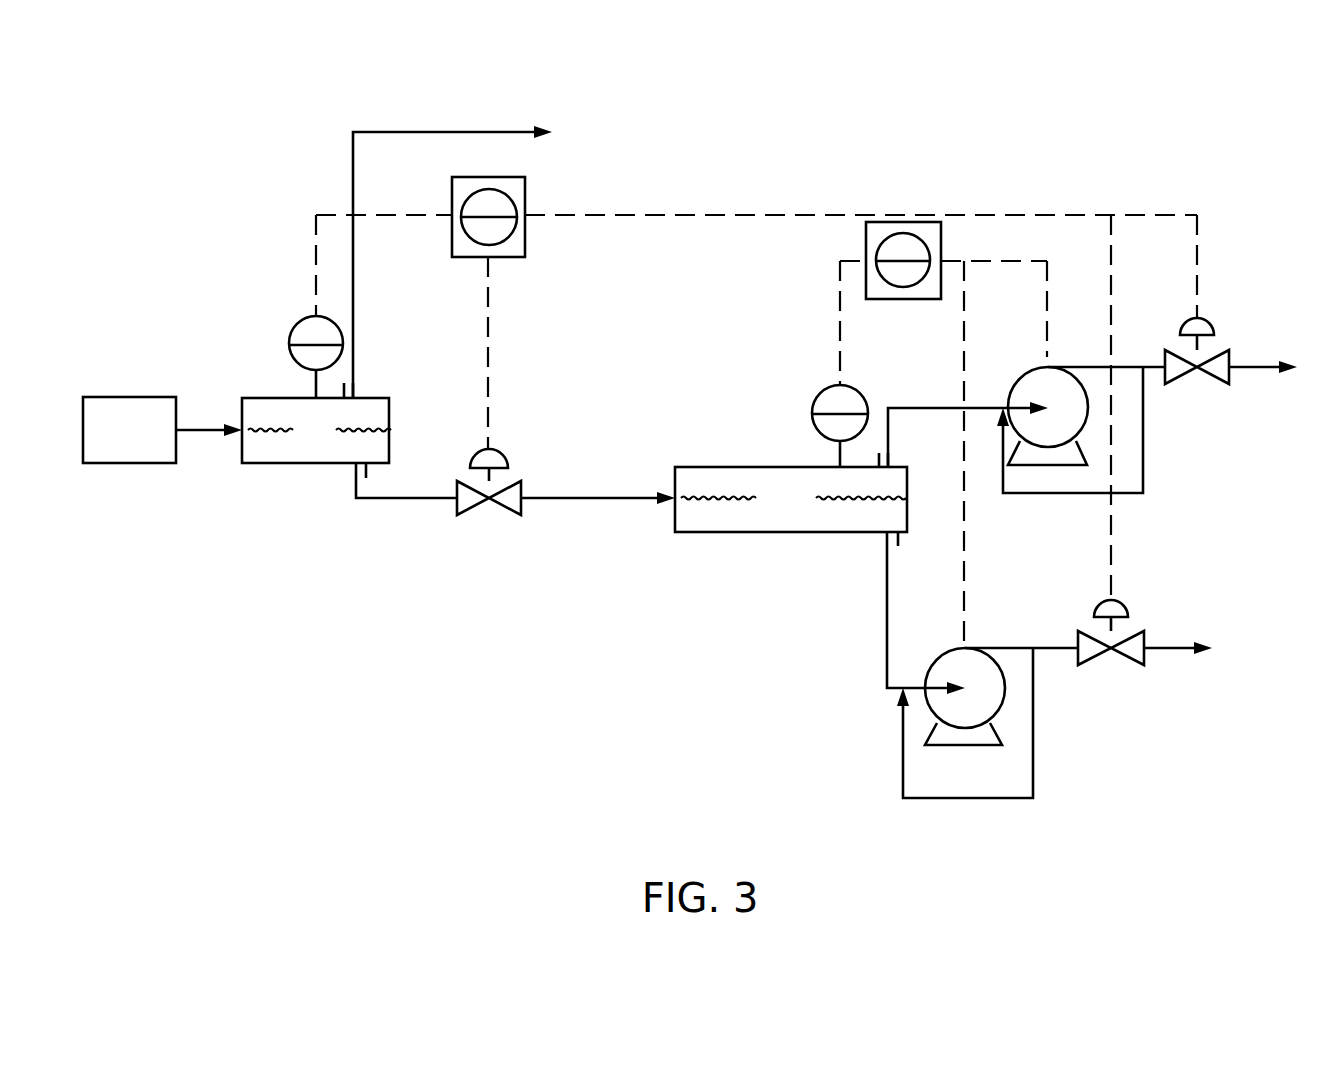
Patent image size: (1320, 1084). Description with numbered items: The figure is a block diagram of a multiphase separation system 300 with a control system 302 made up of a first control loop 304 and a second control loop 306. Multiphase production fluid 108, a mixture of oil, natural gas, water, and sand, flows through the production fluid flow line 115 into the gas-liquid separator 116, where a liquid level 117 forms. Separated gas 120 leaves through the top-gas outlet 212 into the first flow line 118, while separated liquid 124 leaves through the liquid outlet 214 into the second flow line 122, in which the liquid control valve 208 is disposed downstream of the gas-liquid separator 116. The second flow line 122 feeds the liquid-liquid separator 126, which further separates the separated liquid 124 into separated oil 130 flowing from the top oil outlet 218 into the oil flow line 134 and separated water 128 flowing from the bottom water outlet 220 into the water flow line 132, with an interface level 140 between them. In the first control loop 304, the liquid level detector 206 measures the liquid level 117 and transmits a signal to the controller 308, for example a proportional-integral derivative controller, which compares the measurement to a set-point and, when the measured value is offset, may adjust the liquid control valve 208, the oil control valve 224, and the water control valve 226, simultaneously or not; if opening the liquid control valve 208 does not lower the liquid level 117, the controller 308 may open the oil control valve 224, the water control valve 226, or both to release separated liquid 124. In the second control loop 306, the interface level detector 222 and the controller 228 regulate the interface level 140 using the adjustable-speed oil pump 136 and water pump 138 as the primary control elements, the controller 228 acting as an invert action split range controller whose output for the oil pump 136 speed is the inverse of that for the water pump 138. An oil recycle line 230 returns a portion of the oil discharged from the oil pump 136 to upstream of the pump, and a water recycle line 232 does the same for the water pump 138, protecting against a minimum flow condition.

The multiphase production fluid 108 is at (129, 430).
The production fluid flow line 115 is at (204, 427).
The gas-liquid separator 116 is at (315, 430).
The liquid level 117 is at (242, 434).
The first flow line 118 is at (405, 132).
The separated gas 120 is at (390, 414).
The second flow line 122 is at (386, 500).
The separated liquid 124 is at (390, 442).
The liquid-liquid separator 126 is at (791, 499).
The separated water 128 is at (678, 533).
The separated oil 130 is at (676, 478).
The water flow line 132 is at (887, 635).
The oil flow line 134 is at (888, 400).
The oil pump 136 is at (1072, 465).
The water pump 138 is at (975, 747).
The interface level 140 is at (907, 498).
The liquid level detector 206 is at (316, 357).
The liquid control valve 208 is at (506, 512).
The top-gas outlet 212 is at (358, 390).
The liquid outlet 214 is at (350, 473).
The top oil outlet 218 is at (893, 460).
The bottom water outlet 220 is at (883, 537).
The interface level detector 222 is at (840, 426).
The oil control valve 224 is at (1181, 380).
The water control valve 226 is at (1091, 667).
The controller 228 is at (903, 260).
The oil recycle line 230 is at (1143, 450).
The water recycle line 232 is at (1033, 742).
The multiphase separation system 300 is at (699, 857).
The control system 302 is at (313, 318).
The first control loop 304 is at (640, 215).
The second control loop 306 is at (840, 318).
The controller 308 is at (488, 217).